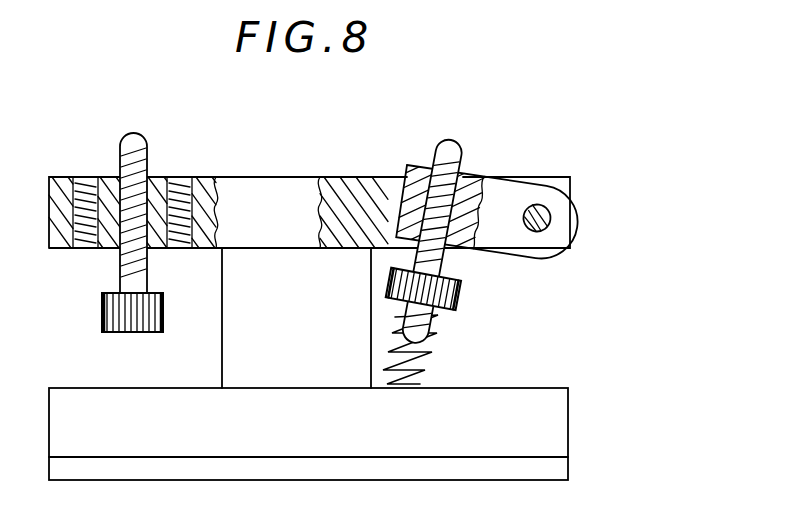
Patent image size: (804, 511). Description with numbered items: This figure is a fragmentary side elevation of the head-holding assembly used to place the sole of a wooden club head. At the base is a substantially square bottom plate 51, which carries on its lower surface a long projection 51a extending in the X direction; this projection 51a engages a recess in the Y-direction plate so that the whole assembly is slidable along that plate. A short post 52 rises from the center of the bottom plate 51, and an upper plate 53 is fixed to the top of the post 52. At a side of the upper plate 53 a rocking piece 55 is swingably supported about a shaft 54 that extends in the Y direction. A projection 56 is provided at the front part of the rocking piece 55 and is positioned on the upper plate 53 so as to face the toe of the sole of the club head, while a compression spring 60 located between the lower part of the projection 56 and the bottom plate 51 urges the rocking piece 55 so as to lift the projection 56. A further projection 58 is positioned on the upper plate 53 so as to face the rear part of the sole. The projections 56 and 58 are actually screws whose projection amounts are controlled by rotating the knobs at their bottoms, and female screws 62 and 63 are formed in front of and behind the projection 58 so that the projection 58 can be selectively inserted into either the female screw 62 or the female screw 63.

The bottom plate 51 is at (553, 410).
The projection 51a is at (555, 468).
The short post 52 is at (238, 357).
The upper plate 53 is at (281, 188).
The shaft 54 is at (553, 213).
The rocking piece 55 is at (505, 194).
The projection 56 is at (447, 142).
The projection 58 is at (128, 143).
The compression spring 60 is at (422, 368).
The female screw 62 is at (183, 183).
The female screw 63 is at (85, 244).